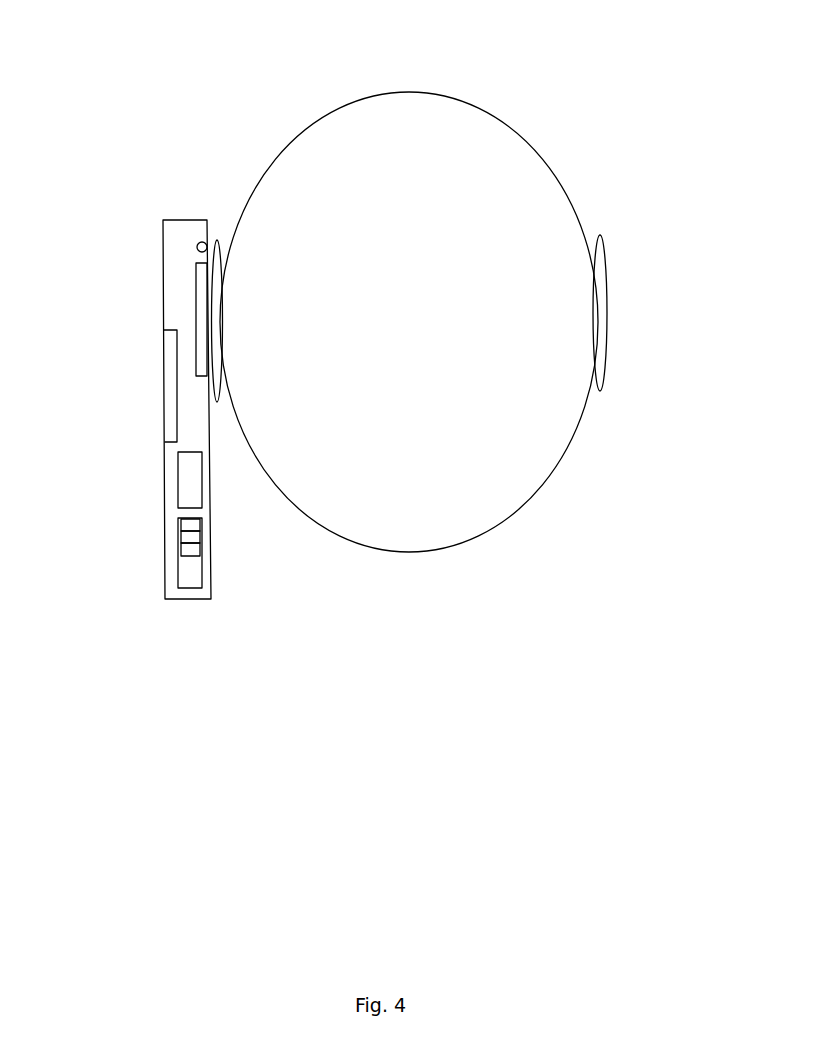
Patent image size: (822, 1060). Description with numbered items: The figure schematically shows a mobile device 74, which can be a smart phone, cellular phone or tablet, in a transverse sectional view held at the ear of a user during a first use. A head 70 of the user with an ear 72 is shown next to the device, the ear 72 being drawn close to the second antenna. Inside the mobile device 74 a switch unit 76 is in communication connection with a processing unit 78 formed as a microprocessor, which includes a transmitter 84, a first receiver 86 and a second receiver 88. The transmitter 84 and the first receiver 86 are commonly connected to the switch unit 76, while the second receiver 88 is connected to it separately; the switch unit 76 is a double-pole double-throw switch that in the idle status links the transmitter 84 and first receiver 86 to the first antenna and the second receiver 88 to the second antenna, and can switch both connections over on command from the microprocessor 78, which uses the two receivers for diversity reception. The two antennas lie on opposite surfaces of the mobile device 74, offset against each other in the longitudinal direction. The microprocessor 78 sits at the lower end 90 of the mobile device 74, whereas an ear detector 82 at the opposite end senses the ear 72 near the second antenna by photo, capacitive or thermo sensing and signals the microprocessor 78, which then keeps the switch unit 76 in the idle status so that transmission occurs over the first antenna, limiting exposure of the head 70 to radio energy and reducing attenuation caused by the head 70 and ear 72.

The head 70 is at (350, 103).
The ear 72 is at (605, 258).
The mobile device 74 is at (172, 220).
The switch unit 76 is at (178, 487).
The processing unit 78 is at (172, 578).
The ear detector 82 is at (200, 243).
The transmitter 84 is at (181, 533).
The first receiver 86 is at (181, 545).
The second receiver 88 is at (181, 557).
The lower end 90 is at (162, 414).